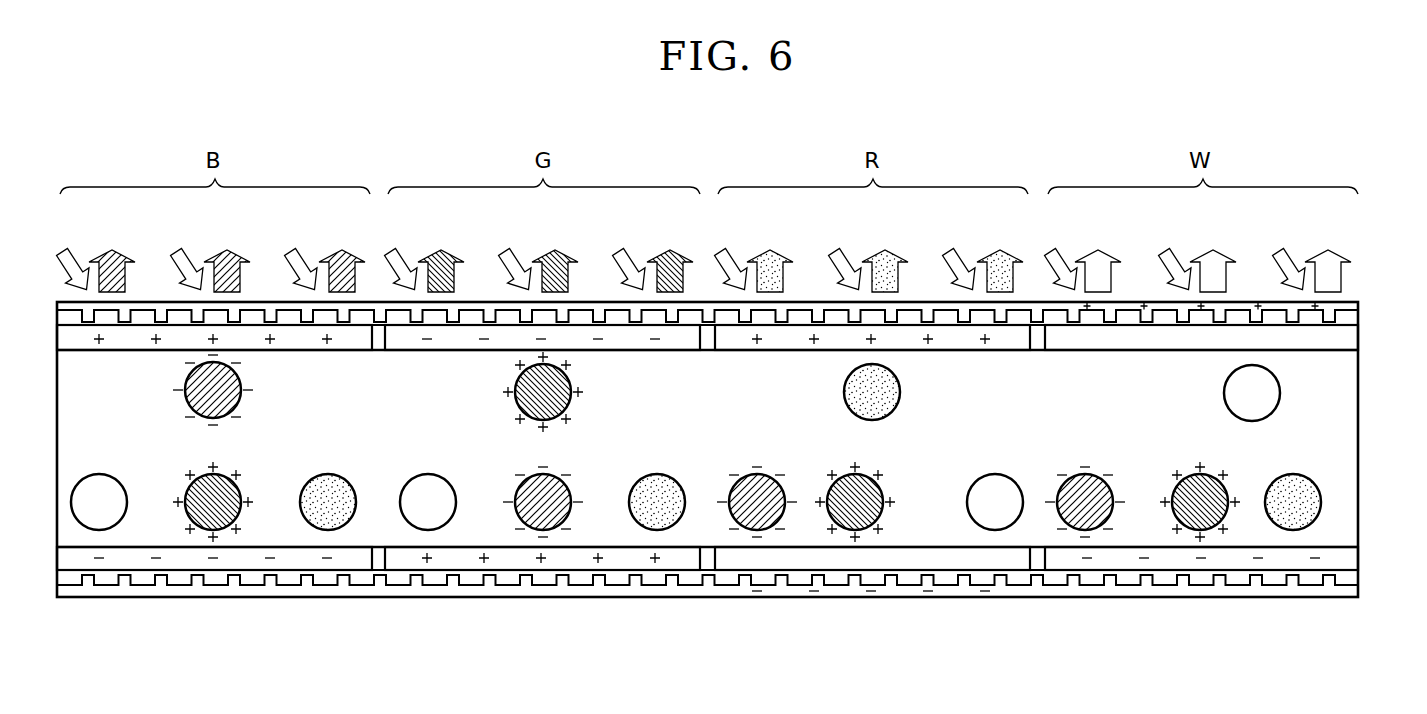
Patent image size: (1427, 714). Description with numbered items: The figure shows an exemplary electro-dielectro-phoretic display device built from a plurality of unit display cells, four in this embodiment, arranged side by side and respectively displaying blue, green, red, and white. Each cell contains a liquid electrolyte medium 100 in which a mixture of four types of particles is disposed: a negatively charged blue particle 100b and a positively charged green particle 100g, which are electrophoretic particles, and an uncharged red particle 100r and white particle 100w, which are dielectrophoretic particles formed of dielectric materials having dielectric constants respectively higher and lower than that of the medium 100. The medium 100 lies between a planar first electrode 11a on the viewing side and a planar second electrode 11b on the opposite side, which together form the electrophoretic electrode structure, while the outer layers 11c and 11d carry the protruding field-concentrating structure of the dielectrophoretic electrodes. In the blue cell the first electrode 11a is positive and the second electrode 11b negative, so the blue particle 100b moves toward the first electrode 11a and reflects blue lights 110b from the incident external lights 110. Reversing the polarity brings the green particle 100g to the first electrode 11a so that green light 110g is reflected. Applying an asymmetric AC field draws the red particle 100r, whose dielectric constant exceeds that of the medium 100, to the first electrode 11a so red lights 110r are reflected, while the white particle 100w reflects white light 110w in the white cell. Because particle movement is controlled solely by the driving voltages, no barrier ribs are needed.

The medium 100 is at (1358, 437).
The blue particle 100b is at (138, 374).
The green particle 100g is at (1168, 465).
The red particle 100r is at (1300, 438).
The white particle 100w is at (93, 470).
The external lights 110 is at (1169, 256).
The blue lights 110b is at (229, 250).
The green light 110g is at (557, 250).
The red lights 110r is at (886, 250).
The white light 110w is at (1215, 250).
The first electrode 11a is at (1350, 340).
The second electrode 11b is at (1350, 558).
The upper substrate 11c is at (1358, 306).
The lower substrate 11d is at (1350, 592).